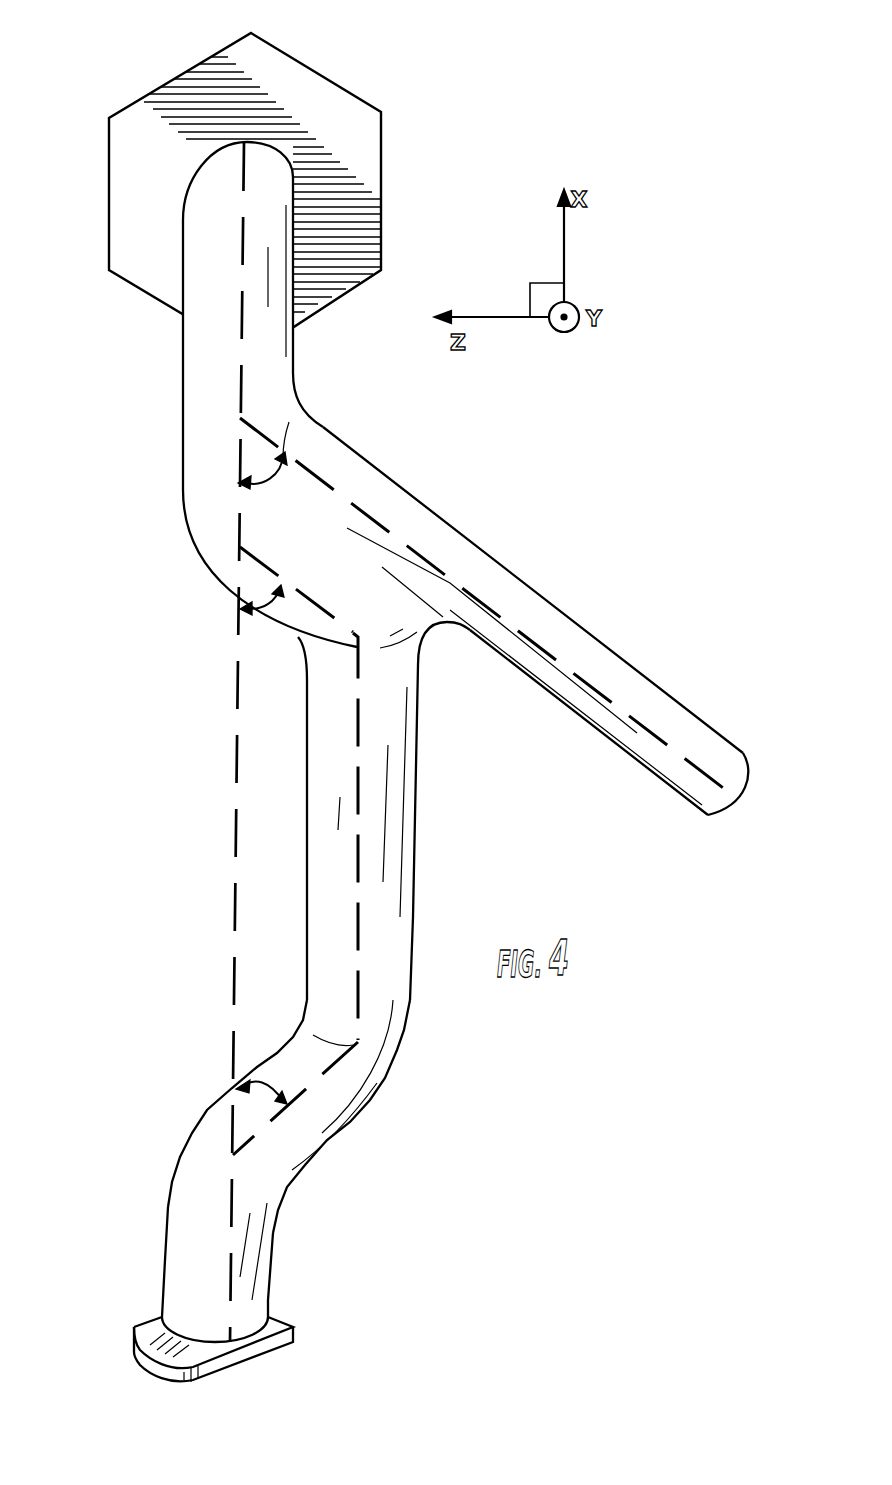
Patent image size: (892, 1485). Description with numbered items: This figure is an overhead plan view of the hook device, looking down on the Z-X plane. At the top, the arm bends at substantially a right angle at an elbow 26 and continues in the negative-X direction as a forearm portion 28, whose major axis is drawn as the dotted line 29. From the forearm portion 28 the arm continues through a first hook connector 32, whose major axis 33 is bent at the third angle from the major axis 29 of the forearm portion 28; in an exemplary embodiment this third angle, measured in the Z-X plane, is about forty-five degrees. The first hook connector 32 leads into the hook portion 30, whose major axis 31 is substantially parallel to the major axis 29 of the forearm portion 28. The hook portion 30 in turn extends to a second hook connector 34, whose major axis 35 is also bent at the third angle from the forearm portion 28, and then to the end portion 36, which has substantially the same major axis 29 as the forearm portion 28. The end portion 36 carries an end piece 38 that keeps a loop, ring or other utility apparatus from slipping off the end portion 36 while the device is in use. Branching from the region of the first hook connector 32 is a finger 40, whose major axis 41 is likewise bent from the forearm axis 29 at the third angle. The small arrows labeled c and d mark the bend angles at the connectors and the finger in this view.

The elbow 26 is at (270, 173).
The forearm portion 28 is at (206, 247).
The major axis of the forearm portion 29 is at (235, 880).
The hook portion 30 is at (393, 842).
The major axis of the hook portion 31 is at (360, 735).
The first hook connector 32 is at (285, 620).
The major axis of the first hook connector 33 is at (308, 593).
The second hook connector 34 is at (303, 1137).
The major axis of the second hook connector 35 is at (323, 1078).
The end portion 36 is at (198, 1227).
The end piece 38 is at (268, 1348).
The finger 40 is at (608, 658).
The major axis of the finger 41 is at (488, 606).
The bend angle c is at (255, 590).
The bend angle d is at (258, 470).